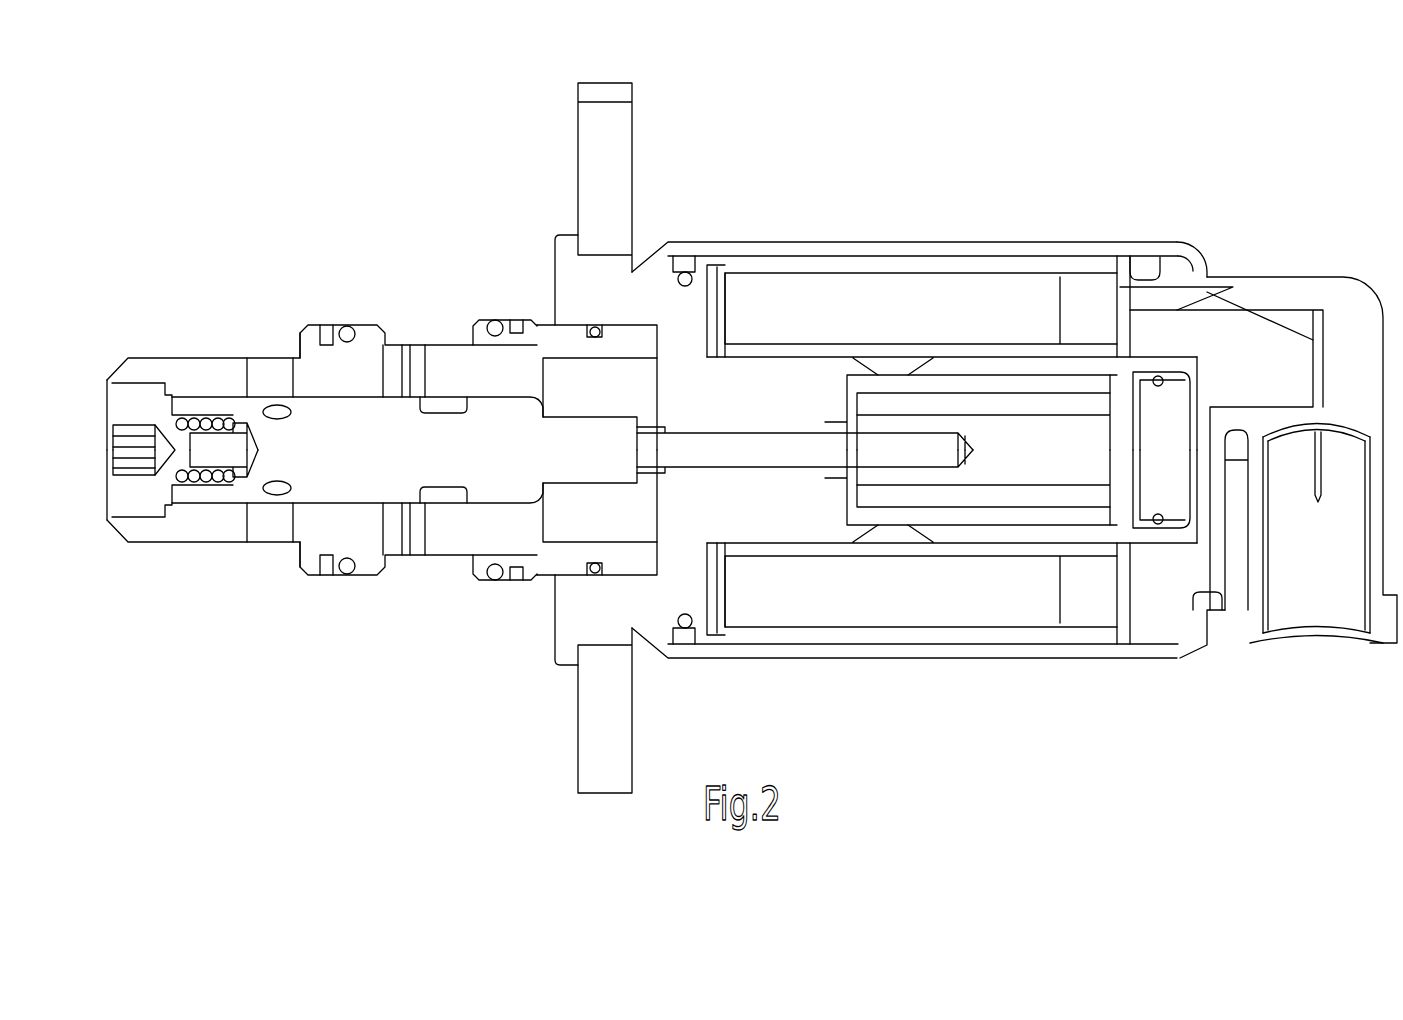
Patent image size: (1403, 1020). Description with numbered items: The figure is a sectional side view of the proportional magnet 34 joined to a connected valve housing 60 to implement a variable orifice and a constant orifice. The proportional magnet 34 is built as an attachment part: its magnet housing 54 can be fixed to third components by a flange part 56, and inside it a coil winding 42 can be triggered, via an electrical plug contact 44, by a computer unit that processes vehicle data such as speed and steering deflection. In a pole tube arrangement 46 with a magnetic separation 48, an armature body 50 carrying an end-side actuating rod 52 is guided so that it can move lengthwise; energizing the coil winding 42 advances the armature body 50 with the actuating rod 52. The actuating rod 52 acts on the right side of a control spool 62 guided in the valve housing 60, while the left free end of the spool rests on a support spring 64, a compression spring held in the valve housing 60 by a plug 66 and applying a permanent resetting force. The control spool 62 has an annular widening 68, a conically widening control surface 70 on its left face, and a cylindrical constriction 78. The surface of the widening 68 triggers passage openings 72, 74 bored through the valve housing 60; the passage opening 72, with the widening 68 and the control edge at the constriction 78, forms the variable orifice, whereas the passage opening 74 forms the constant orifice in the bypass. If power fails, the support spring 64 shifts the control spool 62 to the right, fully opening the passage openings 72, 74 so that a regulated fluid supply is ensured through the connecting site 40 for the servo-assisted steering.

The proportional magnet 34 is at (855, 312).
The connecting site 40 is at (263, 377).
The coil winding 42 is at (957, 580).
The electrical plug contact 44 is at (1290, 597).
The pole tube arrangement 46 is at (985, 363).
The magnetic separation 48 is at (897, 367).
The armature body 50 is at (1027, 453).
The actuating rod 52 is at (722, 448).
The magnet housing 54 is at (782, 248).
The flange part 56 is at (607, 147).
The valve housing 60 is at (440, 365).
The control spool 62 is at (515, 462).
The support spring 64 is at (217, 487).
The plug 66 is at (133, 402).
The annular widening 68 is at (413, 497).
The conically widening control surface 70 is at (255, 478).
The passage opening 72 is at (412, 365).
The passage opening 74 is at (388, 350).
The cylindrical constriction 78 is at (342, 488).